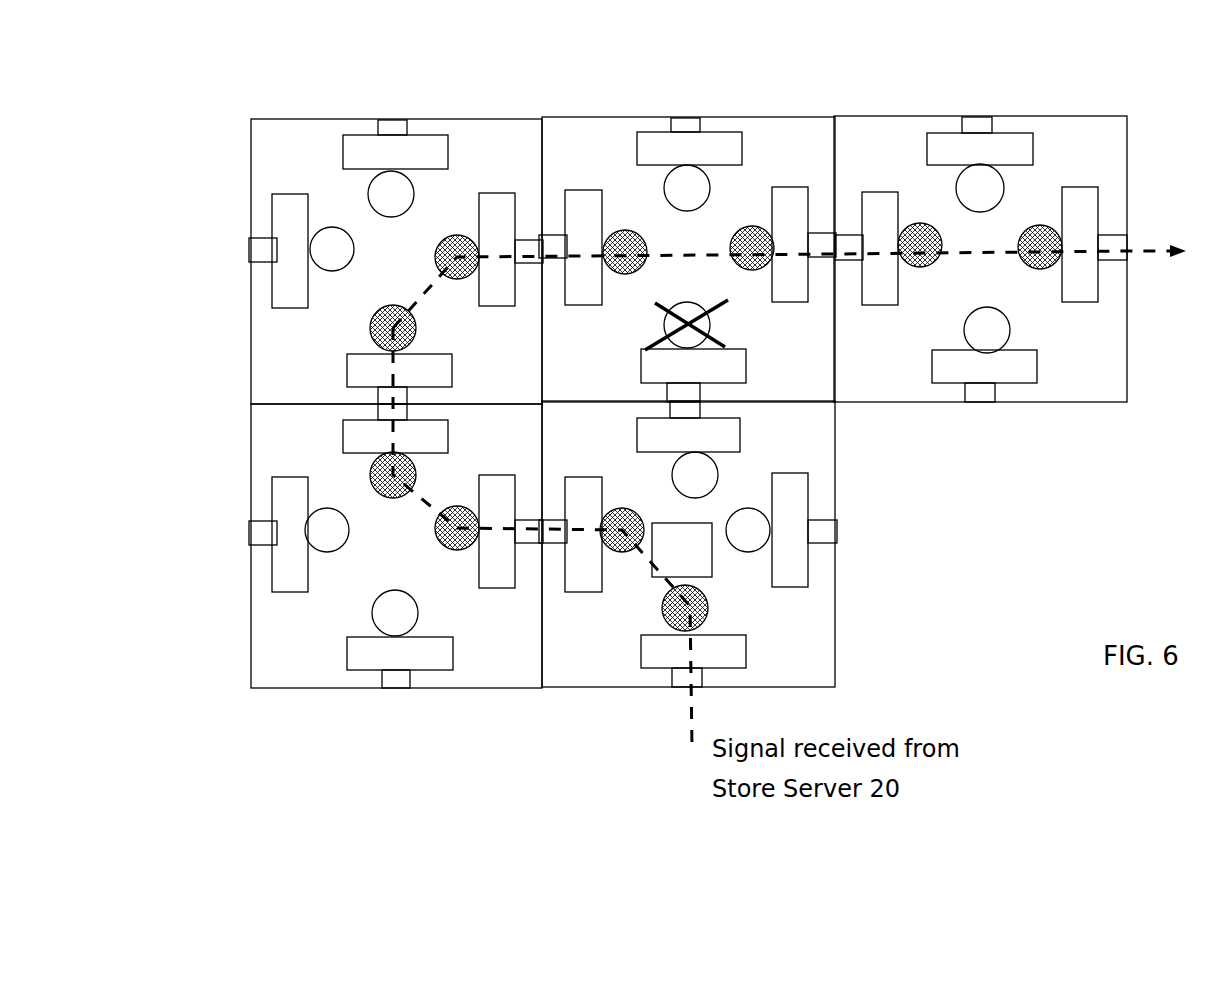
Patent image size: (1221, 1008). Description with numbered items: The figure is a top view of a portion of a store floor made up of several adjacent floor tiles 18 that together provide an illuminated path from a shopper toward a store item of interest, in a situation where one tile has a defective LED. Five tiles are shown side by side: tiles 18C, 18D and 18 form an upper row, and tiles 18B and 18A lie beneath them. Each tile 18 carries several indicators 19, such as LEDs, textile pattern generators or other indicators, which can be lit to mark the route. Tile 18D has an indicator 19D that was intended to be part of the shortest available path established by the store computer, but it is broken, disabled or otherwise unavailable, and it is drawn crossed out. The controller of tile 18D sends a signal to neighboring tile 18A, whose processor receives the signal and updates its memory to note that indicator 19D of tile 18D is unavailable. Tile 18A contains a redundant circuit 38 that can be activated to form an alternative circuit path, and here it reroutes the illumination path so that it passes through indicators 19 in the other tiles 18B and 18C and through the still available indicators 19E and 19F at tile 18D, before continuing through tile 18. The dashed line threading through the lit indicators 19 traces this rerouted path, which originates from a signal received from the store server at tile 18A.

The tile 18 is at (882, 117).
The tile 18A is at (570, 690).
The tile 18B is at (248, 438).
The tile 18C is at (250, 160).
The tile 18D is at (600, 117).
The indicator 19 is at (1018, 263).
The indicator 19D is at (668, 327).
The indicator 19E is at (652, 210).
The indicator 19F is at (762, 198).
The redundant circuit 38 is at (682, 550).